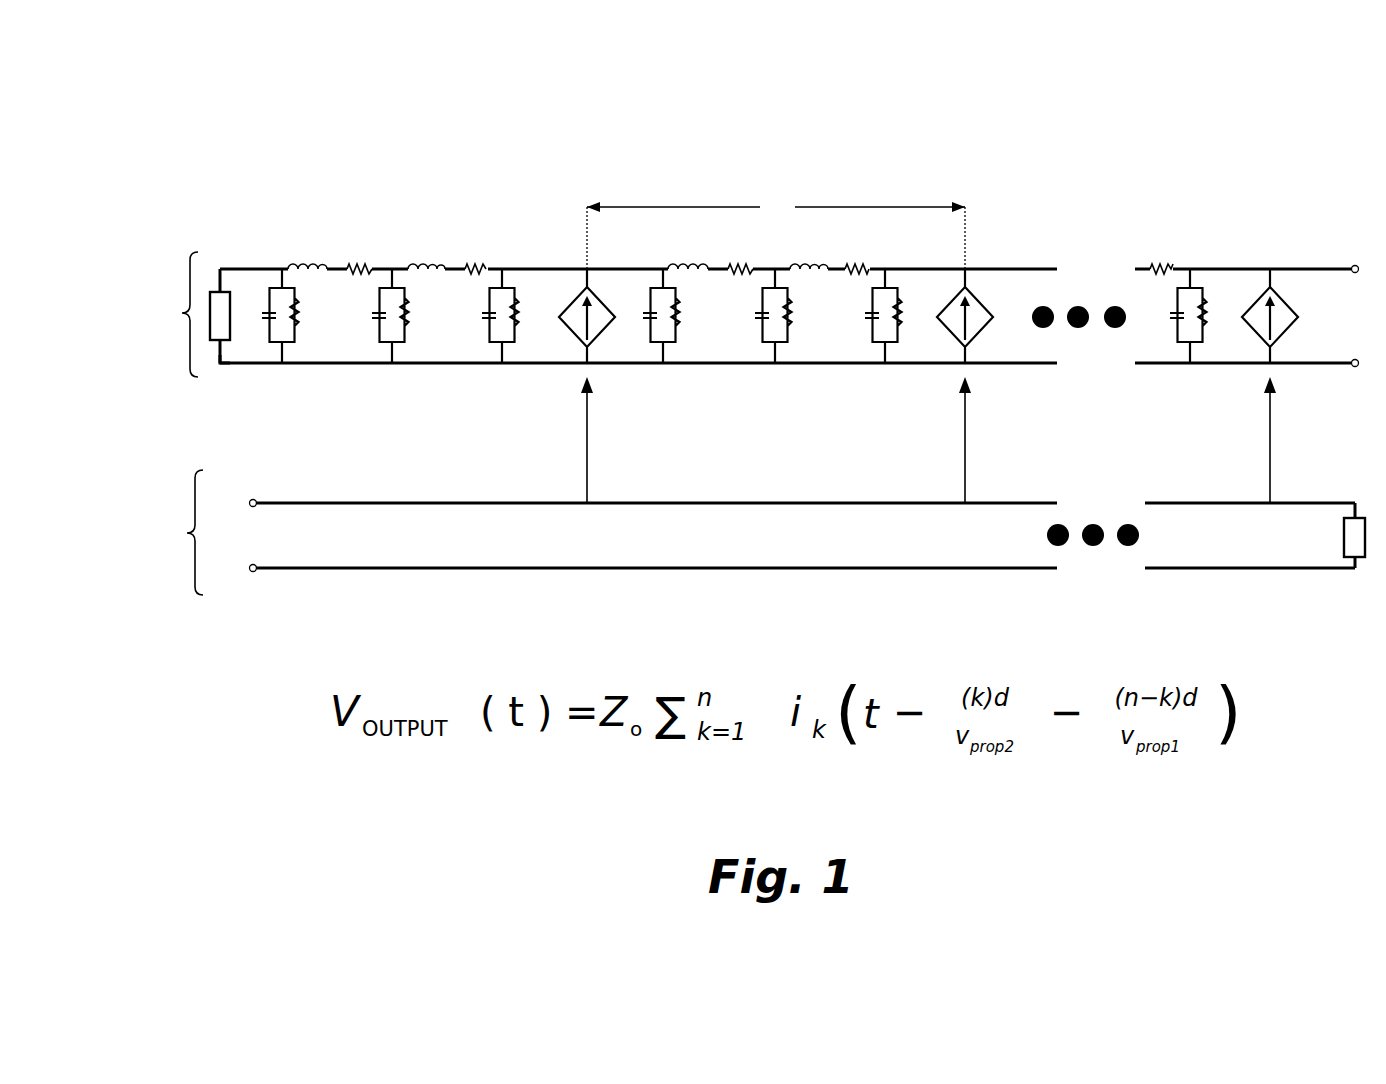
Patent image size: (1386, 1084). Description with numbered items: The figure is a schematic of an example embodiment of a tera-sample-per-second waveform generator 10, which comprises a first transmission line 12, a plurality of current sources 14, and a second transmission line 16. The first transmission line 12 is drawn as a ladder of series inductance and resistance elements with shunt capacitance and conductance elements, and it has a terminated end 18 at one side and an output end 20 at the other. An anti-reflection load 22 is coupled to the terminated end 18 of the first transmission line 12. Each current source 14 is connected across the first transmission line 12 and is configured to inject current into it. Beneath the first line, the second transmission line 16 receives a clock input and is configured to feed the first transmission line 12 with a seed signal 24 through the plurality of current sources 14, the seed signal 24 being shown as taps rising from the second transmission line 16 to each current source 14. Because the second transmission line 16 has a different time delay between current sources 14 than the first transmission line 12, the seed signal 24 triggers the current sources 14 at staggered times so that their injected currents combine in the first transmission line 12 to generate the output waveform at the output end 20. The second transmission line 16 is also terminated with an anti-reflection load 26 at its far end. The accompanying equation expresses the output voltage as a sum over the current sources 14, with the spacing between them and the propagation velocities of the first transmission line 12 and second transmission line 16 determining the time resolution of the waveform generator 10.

The tera-sample-per-second waveform generator 10 is at (278, 145).
The first transmission line 12 is at (738, 284).
The current sources 14 is at (572, 333).
The second transmission line 16 is at (741, 532).
The terminated end 18 is at (242, 387).
The output end 20 is at (1338, 390).
The anti-reflection load 22 is at (224, 291).
The seed signal 24 is at (587, 437).
The anti-reflection load 26 is at (1341, 545).